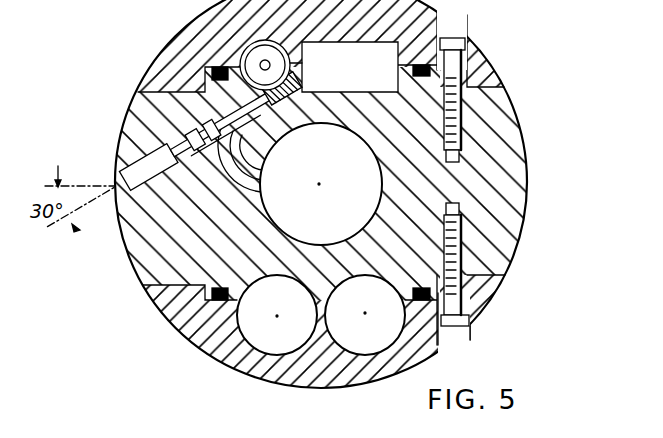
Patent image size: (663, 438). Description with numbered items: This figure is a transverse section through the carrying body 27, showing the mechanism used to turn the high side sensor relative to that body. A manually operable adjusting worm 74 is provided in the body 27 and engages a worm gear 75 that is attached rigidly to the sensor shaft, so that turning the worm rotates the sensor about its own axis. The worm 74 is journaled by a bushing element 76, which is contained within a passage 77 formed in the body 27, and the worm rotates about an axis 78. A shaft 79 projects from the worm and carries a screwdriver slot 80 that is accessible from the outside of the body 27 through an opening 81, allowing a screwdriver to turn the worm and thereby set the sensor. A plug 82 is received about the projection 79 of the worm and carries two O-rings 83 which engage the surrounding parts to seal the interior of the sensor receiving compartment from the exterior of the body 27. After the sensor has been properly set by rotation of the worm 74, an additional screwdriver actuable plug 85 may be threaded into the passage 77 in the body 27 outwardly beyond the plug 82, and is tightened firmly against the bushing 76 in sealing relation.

The carrying body 27 is at (497, 116).
The adjusting worm 74 is at (185, 146).
The worm gear 75 is at (303, 52).
The bushing element 76 is at (286, 134).
The passage 77 is at (257, 164).
The axis 78 is at (98, 218).
The shaft 79 is at (170, 145).
The screwdriver slot 80 is at (251, 203).
The opening 81 is at (117, 180).
The plug 82 is at (205, 130).
The O-rings 83 is at (251, 183).
The screwdriver actuable plug 85 is at (150, 143).